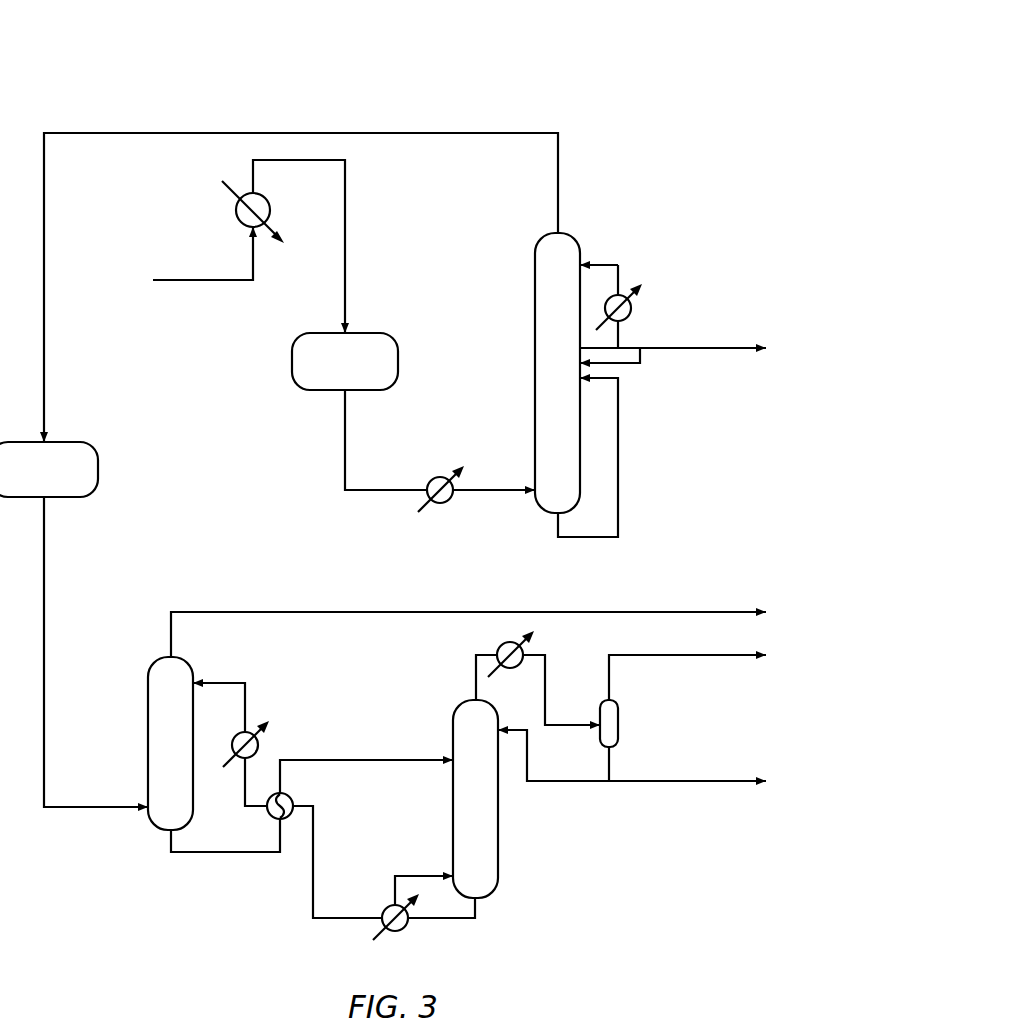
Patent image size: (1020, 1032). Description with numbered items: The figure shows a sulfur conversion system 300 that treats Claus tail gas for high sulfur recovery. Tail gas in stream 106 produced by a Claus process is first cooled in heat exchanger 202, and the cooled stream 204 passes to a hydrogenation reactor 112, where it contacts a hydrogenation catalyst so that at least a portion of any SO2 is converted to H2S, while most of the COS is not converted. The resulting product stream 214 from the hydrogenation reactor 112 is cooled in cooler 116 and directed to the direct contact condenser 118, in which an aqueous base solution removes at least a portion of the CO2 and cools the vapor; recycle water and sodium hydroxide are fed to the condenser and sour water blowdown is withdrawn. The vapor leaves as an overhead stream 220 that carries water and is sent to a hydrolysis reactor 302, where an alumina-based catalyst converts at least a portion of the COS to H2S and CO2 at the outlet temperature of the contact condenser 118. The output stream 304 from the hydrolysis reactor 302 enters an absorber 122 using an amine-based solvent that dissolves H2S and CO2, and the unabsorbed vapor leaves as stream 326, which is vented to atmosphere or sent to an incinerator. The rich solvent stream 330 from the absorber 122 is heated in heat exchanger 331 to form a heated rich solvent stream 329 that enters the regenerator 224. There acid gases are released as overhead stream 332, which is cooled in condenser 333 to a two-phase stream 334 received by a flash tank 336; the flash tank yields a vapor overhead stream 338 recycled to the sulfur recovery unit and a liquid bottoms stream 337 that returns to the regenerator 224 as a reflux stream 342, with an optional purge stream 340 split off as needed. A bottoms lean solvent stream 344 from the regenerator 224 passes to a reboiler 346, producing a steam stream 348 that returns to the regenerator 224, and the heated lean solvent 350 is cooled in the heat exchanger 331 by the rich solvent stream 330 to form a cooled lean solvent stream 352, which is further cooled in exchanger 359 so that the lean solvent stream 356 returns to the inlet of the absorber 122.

The sulfur conversion system 300 is at (622, 30).
The tail gas stream 106 is at (253, 267).
The heat exchanger 202 is at (236, 208).
The cooled stream 204 is at (345, 199).
The overhead stream 220 is at (558, 183).
The hydrogenation reactor 112 is at (360, 372).
The product stream 214 is at (345, 492).
The cooler 116 is at (426, 480).
The direct contact condenser 118 is at (573, 386).
The hydrolysis reactor 302 is at (59, 479).
The output stream 304 is at (44, 586).
The absorber 122 is at (186, 754).
The unabsorbed vapor stream 326 is at (312, 614).
The lean solvent stream 356 is at (246, 695).
The exchanger 359 is at (259, 743).
The cooled lean solvent stream 352 is at (245, 800).
The heat exchanger 331 is at (293, 794).
The heated rich solvent stream 329 is at (392, 758).
The rich solvent stream 330 is at (274, 855).
The heated lean solvent 350 is at (313, 922).
The reboiler 346 is at (396, 933).
The bottoms lean solvent stream 344 is at (478, 905).
The steam stream 348 is at (394, 890).
The regenerator 224 is at (491, 808).
The overhead stream 332 is at (476, 670).
The condenser 333 is at (498, 646).
The two-phase stream 334 is at (545, 660).
The flash tank 336 is at (618, 737).
The liquid bottoms stream 337 is at (609, 766).
The vapor overhead stream 338 is at (690, 656).
The reflux stream 342 is at (572, 784).
The purge stream 340 is at (709, 780).